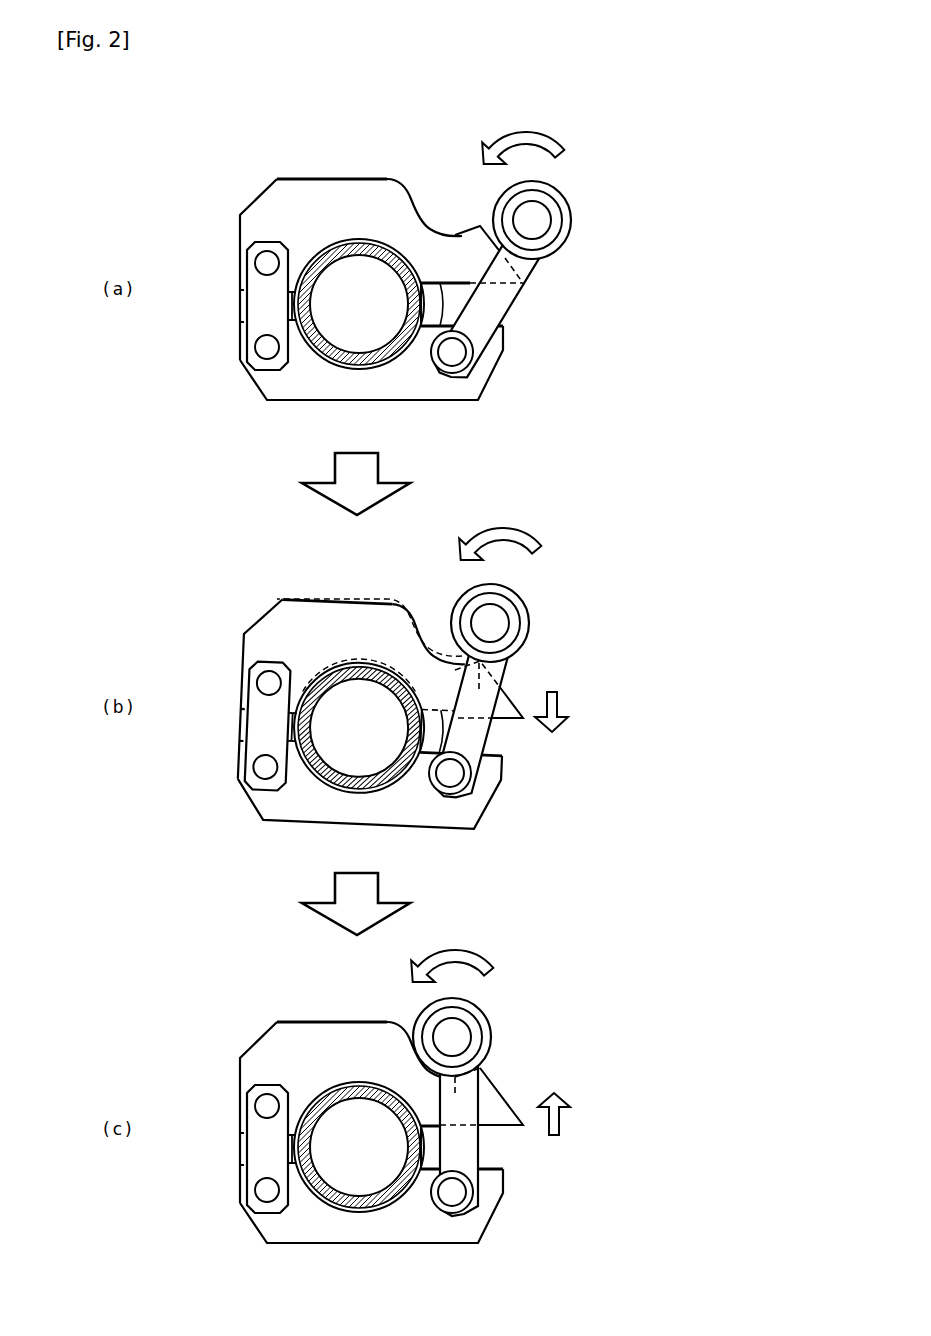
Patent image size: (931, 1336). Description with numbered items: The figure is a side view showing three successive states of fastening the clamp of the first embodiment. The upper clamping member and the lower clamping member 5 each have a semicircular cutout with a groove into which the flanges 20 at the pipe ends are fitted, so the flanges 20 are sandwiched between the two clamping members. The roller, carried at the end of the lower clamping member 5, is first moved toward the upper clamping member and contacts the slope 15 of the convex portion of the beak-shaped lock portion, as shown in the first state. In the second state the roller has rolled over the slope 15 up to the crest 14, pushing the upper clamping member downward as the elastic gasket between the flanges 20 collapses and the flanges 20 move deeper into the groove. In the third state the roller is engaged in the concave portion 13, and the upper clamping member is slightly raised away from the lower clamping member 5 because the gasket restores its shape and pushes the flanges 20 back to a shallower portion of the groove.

The lower clamping member 5 is at (468, 390).
The concave portion 13 is at (457, 1092).
The crest 14 is at (478, 690).
The slope 15 is at (482, 257).
The flange 20 is at (430, 300).